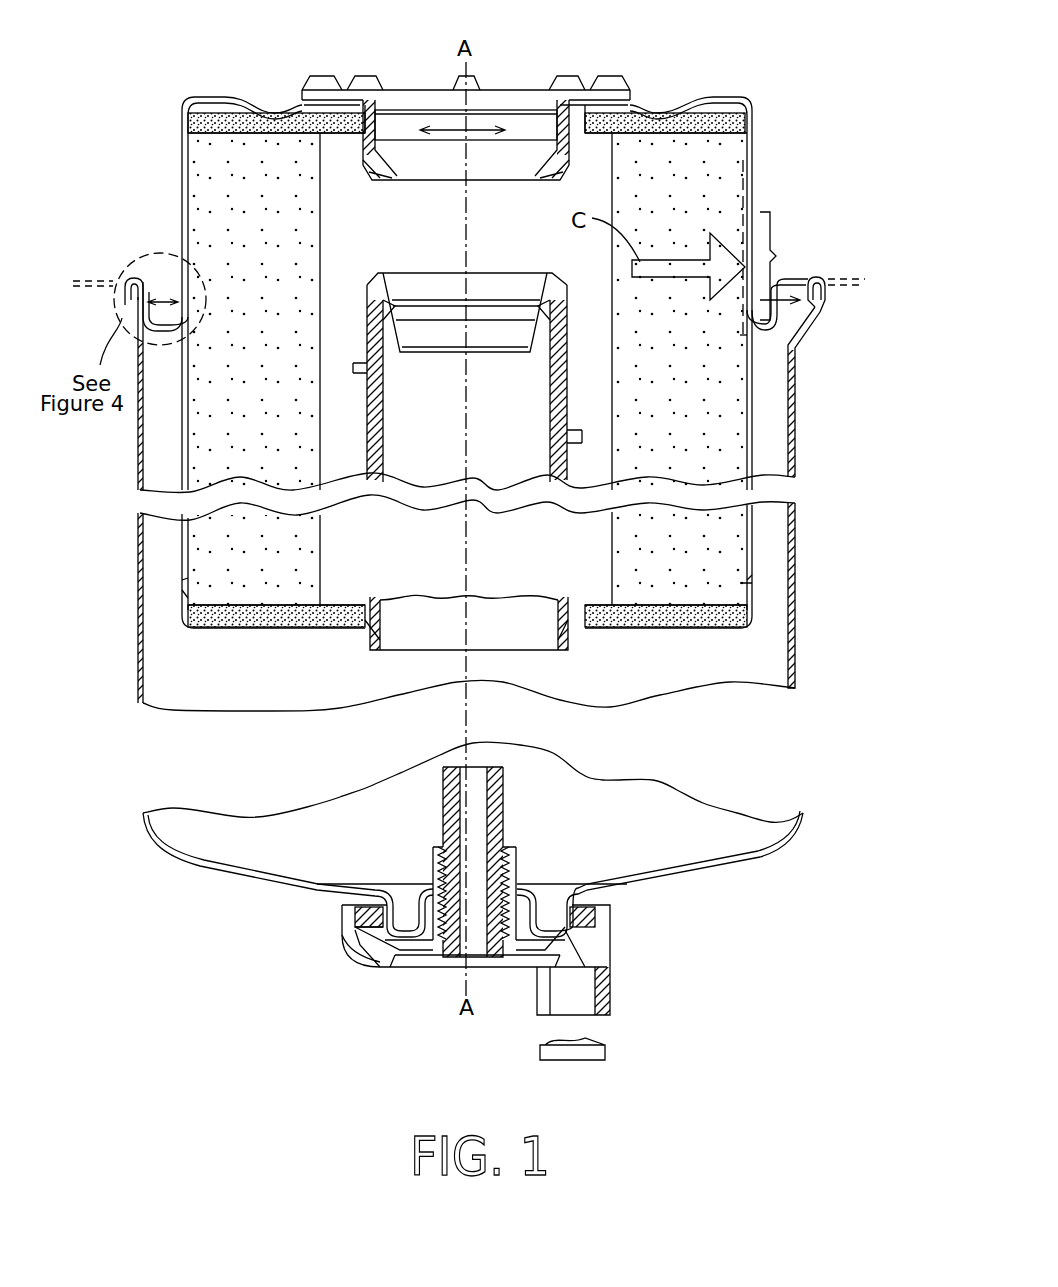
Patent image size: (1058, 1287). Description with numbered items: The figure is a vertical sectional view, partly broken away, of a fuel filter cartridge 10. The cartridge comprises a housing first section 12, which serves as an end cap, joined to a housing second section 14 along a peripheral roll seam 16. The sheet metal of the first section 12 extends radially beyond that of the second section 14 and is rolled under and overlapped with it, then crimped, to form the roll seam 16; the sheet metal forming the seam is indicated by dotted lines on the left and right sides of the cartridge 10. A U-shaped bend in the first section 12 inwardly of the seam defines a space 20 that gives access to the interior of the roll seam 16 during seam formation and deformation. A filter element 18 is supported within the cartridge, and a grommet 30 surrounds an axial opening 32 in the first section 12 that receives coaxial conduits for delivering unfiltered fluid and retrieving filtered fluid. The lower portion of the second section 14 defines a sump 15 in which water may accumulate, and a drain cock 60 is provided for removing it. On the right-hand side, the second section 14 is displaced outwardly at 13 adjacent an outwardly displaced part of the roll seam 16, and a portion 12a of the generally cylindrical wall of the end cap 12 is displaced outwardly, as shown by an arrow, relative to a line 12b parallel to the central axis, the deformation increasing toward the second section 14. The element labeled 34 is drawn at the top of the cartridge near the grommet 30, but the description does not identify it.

The filter cartridge 10 is at (218, 54).
The housing first section 12 is at (753, 150).
The outwardly displaced portion of the end cap wall 12a is at (792, 266).
The line parallel to central axis 12b is at (745, 342).
The outwardly displaced location of housing second section 13 is at (800, 345).
The housing second section 14 is at (798, 618).
The sump 15 is at (590, 860).
The peripheral roll seam 16 is at (830, 308).
The filter element 18 is at (222, 546).
The space 20 is at (160, 297).
The grommet 30 is at (570, 90).
The axial opening 32 is at (440, 120).
The tab 34 is at (318, 88).
The drain cock 60 is at (368, 953).